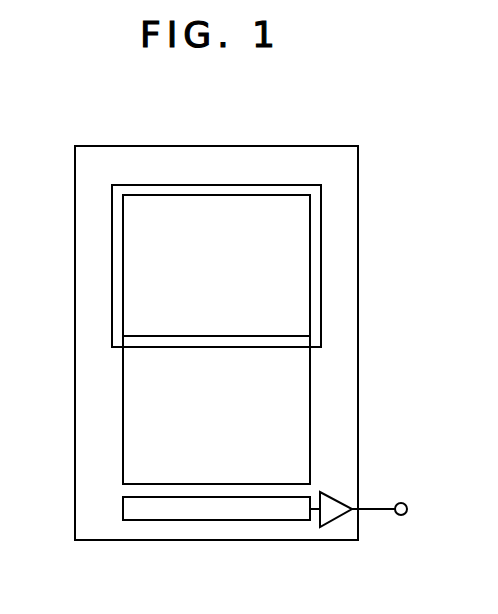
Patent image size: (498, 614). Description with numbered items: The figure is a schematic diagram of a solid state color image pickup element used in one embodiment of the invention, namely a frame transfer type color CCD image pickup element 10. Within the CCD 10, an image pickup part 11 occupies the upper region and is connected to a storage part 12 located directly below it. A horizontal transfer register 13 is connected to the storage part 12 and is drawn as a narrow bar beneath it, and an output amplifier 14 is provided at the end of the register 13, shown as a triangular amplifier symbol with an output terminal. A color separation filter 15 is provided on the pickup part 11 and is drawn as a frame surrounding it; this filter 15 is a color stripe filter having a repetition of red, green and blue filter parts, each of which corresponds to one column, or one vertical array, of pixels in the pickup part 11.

The frame transfer type color CCD image pickup element 10 is at (312, 146).
The image pickup part 11 is at (283, 292).
The storage part 12 is at (292, 455).
The horizontal transfer register 13 is at (202, 507).
The output amplifier 14 is at (332, 510).
The color separation filter 15 is at (321, 191).